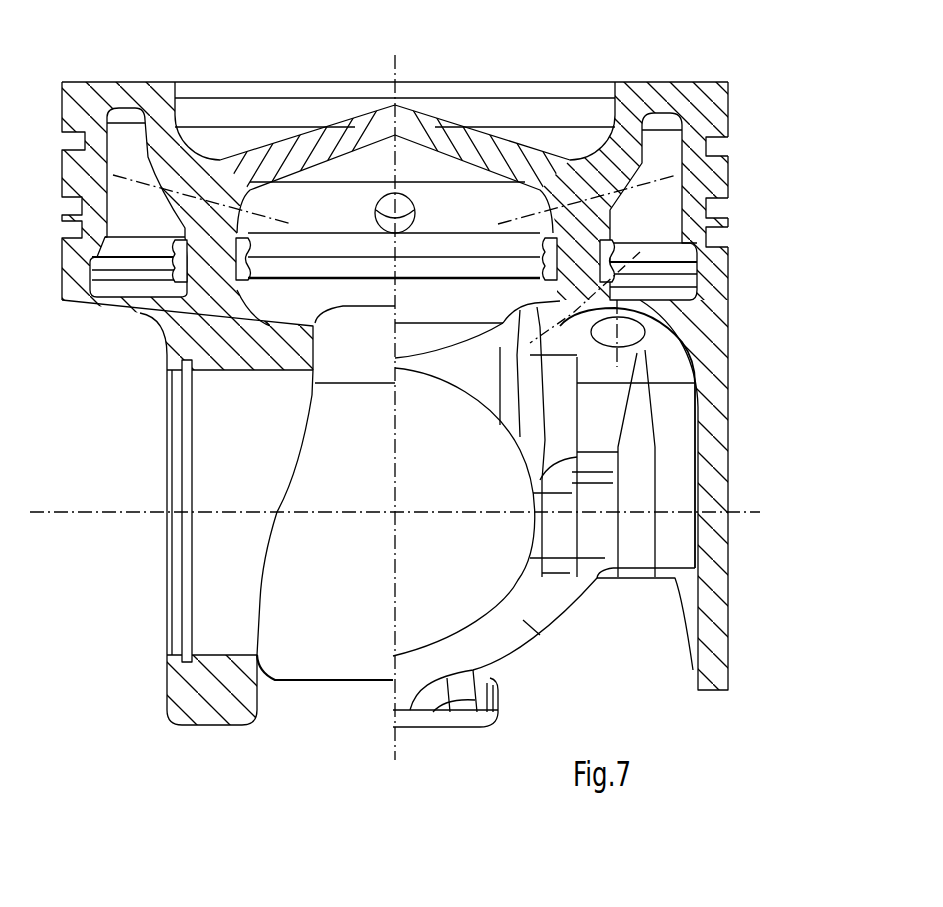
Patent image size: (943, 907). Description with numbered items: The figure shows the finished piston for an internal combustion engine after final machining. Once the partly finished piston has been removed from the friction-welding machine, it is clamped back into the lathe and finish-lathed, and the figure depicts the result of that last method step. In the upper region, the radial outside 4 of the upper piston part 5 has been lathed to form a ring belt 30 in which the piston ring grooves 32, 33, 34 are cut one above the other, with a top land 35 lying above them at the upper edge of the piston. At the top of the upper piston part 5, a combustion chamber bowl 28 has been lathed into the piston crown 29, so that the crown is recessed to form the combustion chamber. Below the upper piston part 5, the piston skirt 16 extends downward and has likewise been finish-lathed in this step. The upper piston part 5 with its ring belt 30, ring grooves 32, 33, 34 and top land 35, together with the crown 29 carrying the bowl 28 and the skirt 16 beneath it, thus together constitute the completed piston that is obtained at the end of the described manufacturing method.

The radial outside 4 is at (430, 372).
The upper piston part 5 is at (702, 113).
The piston skirt 16 is at (708, 413).
The combustion chamber bowl 28 is at (233, 140).
The piston crown 29 is at (492, 82).
The ring belt 30 is at (62, 243).
The piston ring groove 32 is at (715, 146).
The piston ring groove 33 is at (718, 207).
The piston ring groove 34 is at (715, 236).
The top land 35 is at (728, 118).